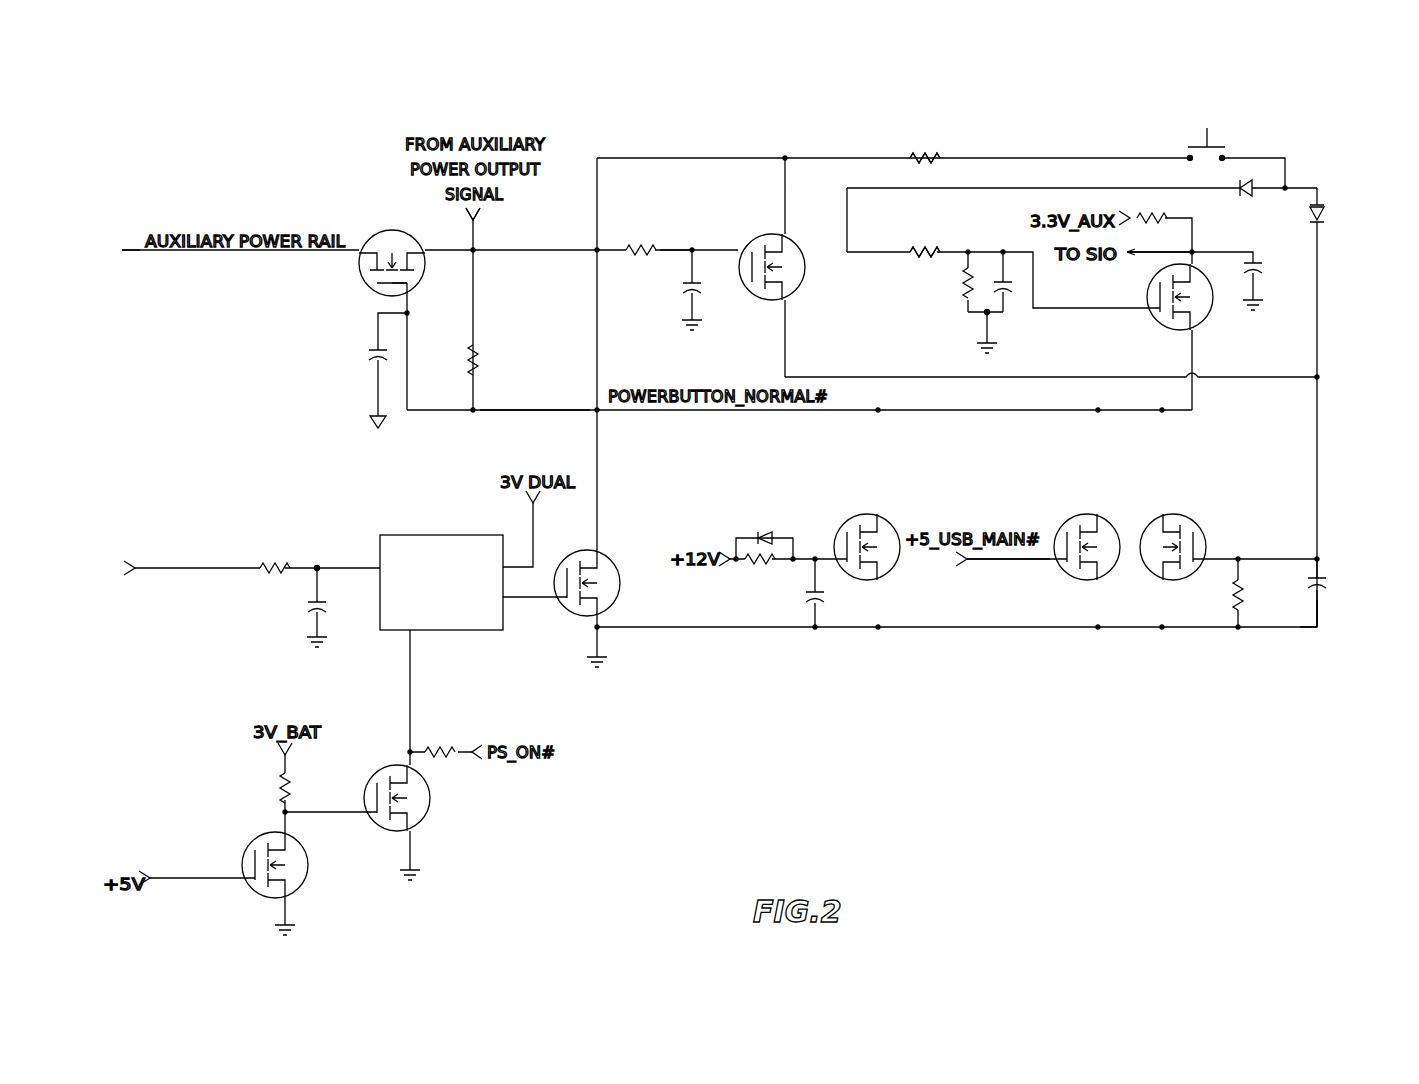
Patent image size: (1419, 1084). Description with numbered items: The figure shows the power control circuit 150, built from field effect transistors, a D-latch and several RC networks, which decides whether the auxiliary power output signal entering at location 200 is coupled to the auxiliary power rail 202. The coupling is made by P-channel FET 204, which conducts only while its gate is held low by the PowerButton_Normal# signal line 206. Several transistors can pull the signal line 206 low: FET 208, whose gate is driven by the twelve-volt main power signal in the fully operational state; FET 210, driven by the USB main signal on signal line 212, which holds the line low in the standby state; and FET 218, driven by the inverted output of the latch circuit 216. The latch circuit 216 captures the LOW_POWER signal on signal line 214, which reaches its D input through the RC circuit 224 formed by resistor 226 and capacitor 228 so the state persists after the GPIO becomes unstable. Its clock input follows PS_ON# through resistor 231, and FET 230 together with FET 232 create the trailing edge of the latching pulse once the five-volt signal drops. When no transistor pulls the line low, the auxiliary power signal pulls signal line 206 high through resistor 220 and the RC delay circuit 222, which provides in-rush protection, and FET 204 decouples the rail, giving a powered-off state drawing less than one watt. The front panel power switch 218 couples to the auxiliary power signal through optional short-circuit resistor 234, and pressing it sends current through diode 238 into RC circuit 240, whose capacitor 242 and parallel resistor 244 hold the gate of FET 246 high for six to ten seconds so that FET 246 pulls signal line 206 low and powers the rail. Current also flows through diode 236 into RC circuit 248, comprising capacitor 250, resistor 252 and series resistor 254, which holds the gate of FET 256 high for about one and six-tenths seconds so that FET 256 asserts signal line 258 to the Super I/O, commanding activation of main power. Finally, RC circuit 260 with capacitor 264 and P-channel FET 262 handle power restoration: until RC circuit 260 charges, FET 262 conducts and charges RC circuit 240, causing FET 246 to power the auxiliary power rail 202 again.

The power control circuit 150 is at (1168, 786).
The location 200 is at (496, 230).
The auxiliary power rail 202 is at (122, 250).
The P-channel FET 204 is at (372, 232).
The signal line 206 is at (515, 410).
The N-channel FET 208 is at (853, 518).
The N-channel FET 210 is at (1070, 518).
The signal line 212 is at (1005, 562).
The signal line 214 is at (180, 572).
The latch circuit 216 is at (428, 535).
The N-channel FET / front panel power switch 218 is at (1249, 143).
The resistor 220 is at (478, 352).
The RC delay circuit 222 is at (359, 374).
The RC circuit 224 is at (318, 549).
The resistor 226 is at (287, 565).
The capacitor 228 is at (310, 600).
The N-channel FET 230 is at (305, 880).
The resistor 231 is at (450, 745).
The N-channel FET 232 is at (430, 800).
The resistor 234 is at (935, 155).
The diode 236 is at (1252, 196).
The diode 238 is at (1330, 212).
The RC circuit 240 is at (1290, 660).
The capacitor 242 is at (1330, 581).
The resistor 244 is at (1250, 580).
The N-channel FET 246 is at (1193, 520).
The RC circuit 248 is at (934, 287).
The capacitor 250 is at (1010, 292).
The resistor 252 is at (960, 298).
The resistor 254 is at (923, 248).
The N-channel FET 256 is at (1205, 318).
The signal line 258 is at (1152, 253).
The RC circuit 260 is at (678, 232).
The P-channel FET 262 is at (800, 290).
The capacitor 264 is at (685, 283).